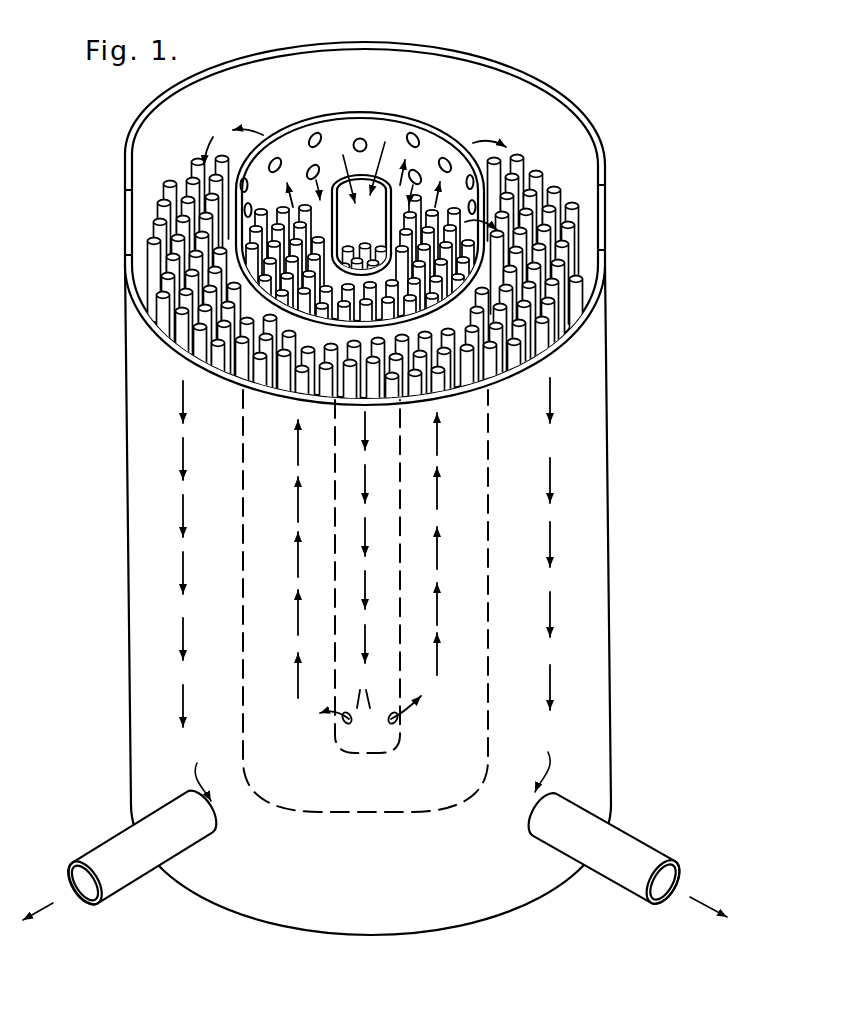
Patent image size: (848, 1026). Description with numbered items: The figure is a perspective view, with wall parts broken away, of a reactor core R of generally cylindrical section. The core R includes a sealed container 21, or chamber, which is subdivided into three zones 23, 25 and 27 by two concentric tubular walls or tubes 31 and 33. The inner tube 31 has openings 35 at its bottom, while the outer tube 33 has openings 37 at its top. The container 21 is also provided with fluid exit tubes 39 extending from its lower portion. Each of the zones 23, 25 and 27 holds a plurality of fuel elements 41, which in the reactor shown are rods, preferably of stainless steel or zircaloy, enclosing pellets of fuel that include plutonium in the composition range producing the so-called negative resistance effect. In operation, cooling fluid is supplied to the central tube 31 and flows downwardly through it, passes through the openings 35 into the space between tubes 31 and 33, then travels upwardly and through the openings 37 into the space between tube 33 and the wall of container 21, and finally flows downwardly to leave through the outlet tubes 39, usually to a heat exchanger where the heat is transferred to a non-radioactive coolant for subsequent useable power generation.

The sealed container 21 is at (131, 360).
The zone 23 is at (349, 242).
The zone 25 is at (452, 233).
The zone 27 is at (538, 203).
The tubular wall 31 is at (372, 187).
The tubular wall 33 is at (427, 128).
The openings 35 is at (400, 722).
The openings 37 is at (313, 137).
The fluid exit tubes 39 is at (117, 843).
The fuel elements 41 is at (168, 258).
The reactor core R is at (130, 452).